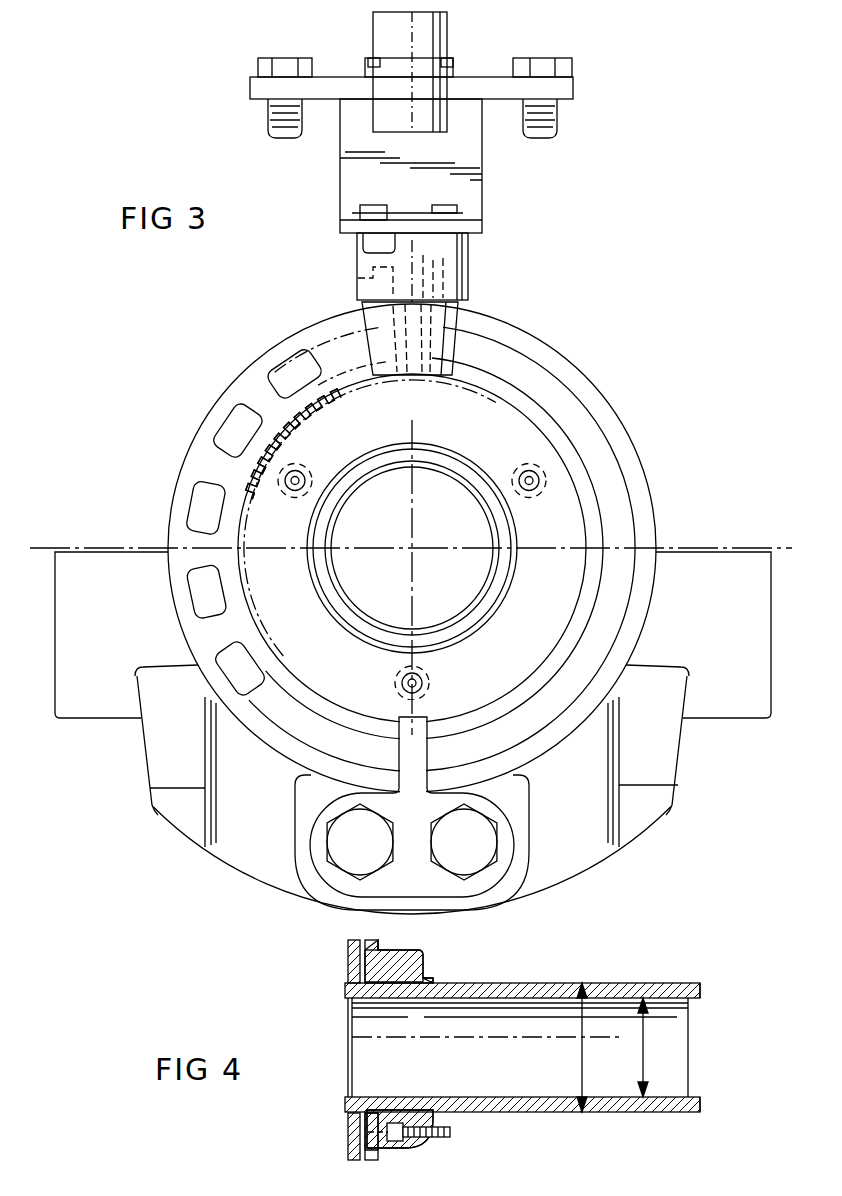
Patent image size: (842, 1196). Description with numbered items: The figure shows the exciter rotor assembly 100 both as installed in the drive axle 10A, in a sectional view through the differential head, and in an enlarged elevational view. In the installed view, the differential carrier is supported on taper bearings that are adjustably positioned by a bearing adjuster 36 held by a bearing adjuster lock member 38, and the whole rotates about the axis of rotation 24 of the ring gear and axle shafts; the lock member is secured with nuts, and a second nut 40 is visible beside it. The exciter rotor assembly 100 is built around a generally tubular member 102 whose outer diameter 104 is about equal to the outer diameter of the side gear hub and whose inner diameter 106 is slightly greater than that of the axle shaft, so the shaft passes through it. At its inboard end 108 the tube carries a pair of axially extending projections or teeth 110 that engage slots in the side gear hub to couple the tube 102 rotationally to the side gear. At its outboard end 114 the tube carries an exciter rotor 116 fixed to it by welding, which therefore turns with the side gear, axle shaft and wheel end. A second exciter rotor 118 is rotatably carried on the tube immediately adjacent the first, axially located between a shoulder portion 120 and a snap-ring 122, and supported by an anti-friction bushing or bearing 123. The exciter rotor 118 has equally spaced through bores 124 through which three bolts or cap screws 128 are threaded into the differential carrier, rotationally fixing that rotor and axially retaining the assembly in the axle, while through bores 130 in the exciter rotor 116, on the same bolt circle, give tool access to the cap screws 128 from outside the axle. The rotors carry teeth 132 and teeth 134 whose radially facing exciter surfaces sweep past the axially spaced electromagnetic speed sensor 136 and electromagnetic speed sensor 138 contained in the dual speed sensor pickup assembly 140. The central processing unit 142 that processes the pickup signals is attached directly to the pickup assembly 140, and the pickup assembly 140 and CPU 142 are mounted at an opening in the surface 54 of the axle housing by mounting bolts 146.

In FIG. 3, the drive axle 10A is at (597, 247).
In FIG. 3, the axis of rotation 24 is at (414, 545).
In FIG. 3, the bearing adjuster 36 is at (608, 422).
In FIG. 3, the bearing adjuster lock member 38 is at (438, 880).
In FIG. 3, the hex nut 40 is at (490, 852).
In FIG. 3, the surface 54 is at (497, 80).
In FIG. 4, the exciter rotor assembly 100 is at (655, 968).
In FIG. 4, the tubular member 102 is at (562, 985).
In FIG. 4, the outer diameter 104 is at (580, 1050).
In FIG. 4, the inner diameter 106 is at (648, 1050).
In FIG. 4, the inboard end 108 is at (680, 985).
In FIG. 4, the projections or teeth 110 is at (701, 990).
In FIG. 4, the outboard end 114 is at (345, 992).
In FIG. 3, the exciter rotor 116 is at (290, 425).
In FIG. 4, the exciter rotor 116 is at (349, 962).
In FIG. 3, the exciter rotor 118 is at (290, 425).
In FIG. 4, the exciter rotor 118 is at (425, 978).
In FIG. 4, the shoulder portion 120 is at (368, 1115).
In FIG. 4, the snap-ring 122 is at (478, 981).
In FIG. 4, the anti-friction bushing or bearing 123 is at (410, 1112).
In FIG. 3, the through bores 124 is at (302, 468).
In FIG. 4, the through bores 124 is at (391, 1141).
In FIG. 3, the bolts or cap screws 128 is at (520, 470).
In FIG. 4, the bolts or cap screws 128 is at (452, 1132).
In FIG. 3, the through bores 130 is at (431, 686).
In FIG. 4, the through bores 130 is at (352, 1135).
In FIG. 4, the teeth 132 is at (352, 938).
In FIG. 4, the teeth 134 is at (371, 940).
In FIG. 3, the electromagnetic speed sensor 136 is at (471, 317).
In FIG. 3, the electromagnetic speed sensor 138 is at (358, 278).
In FIG. 3, the dual speed sensor pickup assembly 140 is at (466, 273).
In FIG. 3, the central processing unit 142 is at (352, 113).
In FIG. 3, the mounting bolts 146 is at (540, 62).